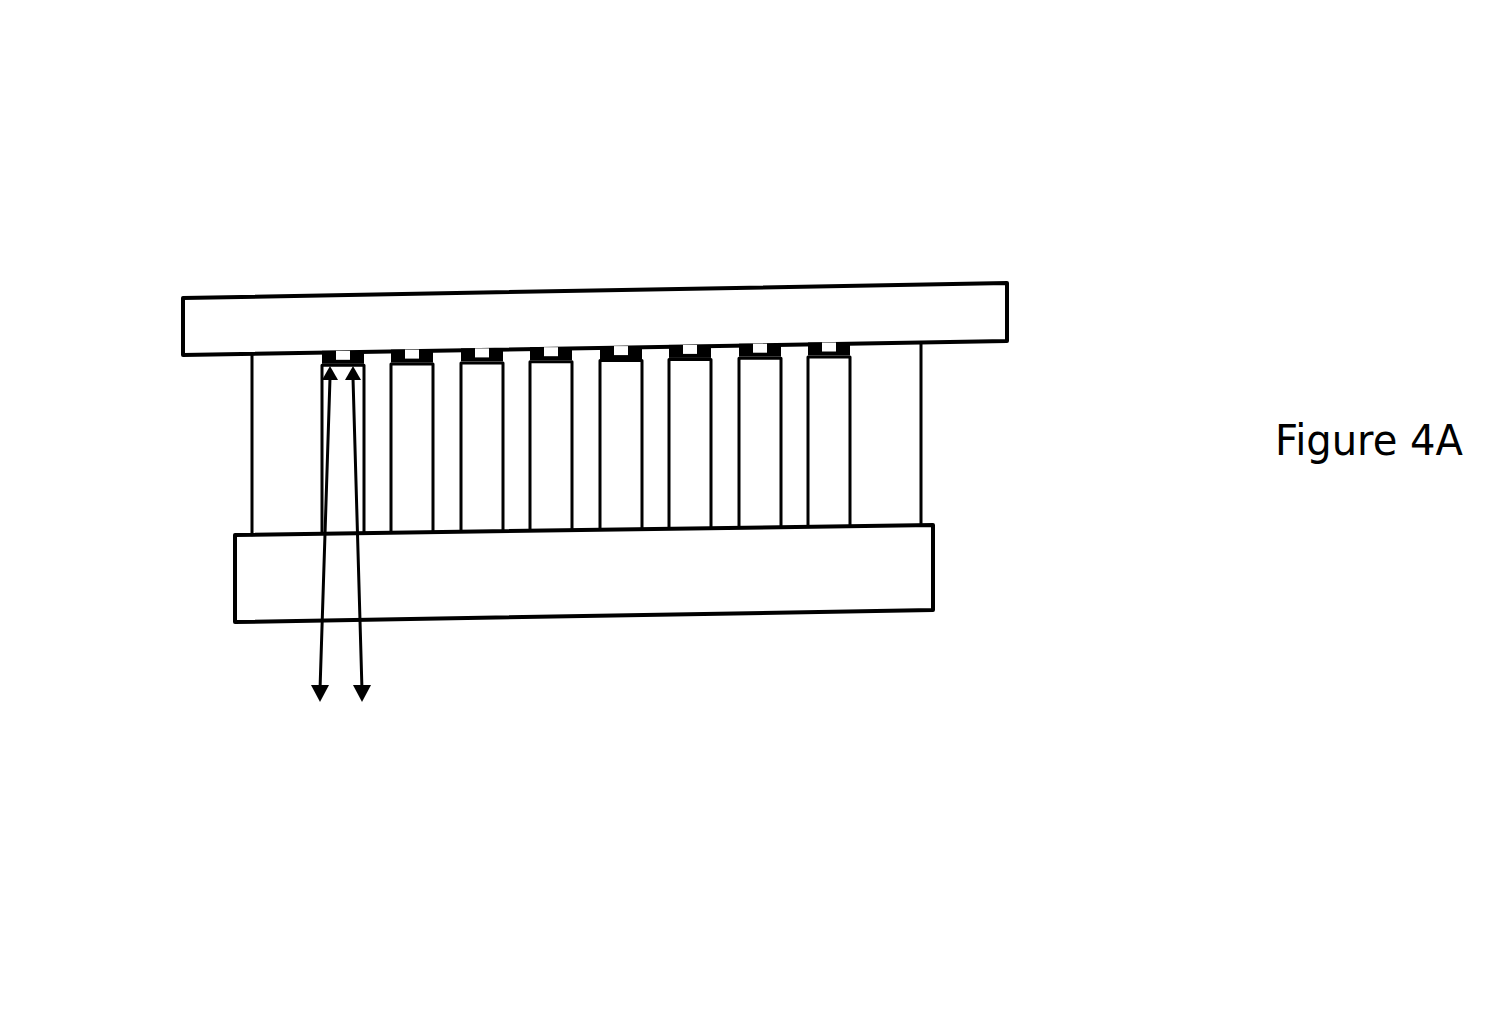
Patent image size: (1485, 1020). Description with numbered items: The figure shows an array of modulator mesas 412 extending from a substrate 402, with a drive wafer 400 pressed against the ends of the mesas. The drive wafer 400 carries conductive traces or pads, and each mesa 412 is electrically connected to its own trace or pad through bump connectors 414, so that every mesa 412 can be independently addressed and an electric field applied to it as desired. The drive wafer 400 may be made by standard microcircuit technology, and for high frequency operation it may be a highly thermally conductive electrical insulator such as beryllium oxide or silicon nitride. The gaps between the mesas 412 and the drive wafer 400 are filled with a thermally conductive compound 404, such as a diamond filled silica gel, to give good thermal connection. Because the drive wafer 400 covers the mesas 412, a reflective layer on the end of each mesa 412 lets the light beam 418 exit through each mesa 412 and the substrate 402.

The drive wafer 400 is at (980, 282).
The substrate 402 is at (765, 613).
The thermally conductive compound 404 is at (892, 455).
The modulator mesa 412 is at (600, 385).
The bump connector 414 is at (812, 347).
The light beam 418 is at (404, 534).